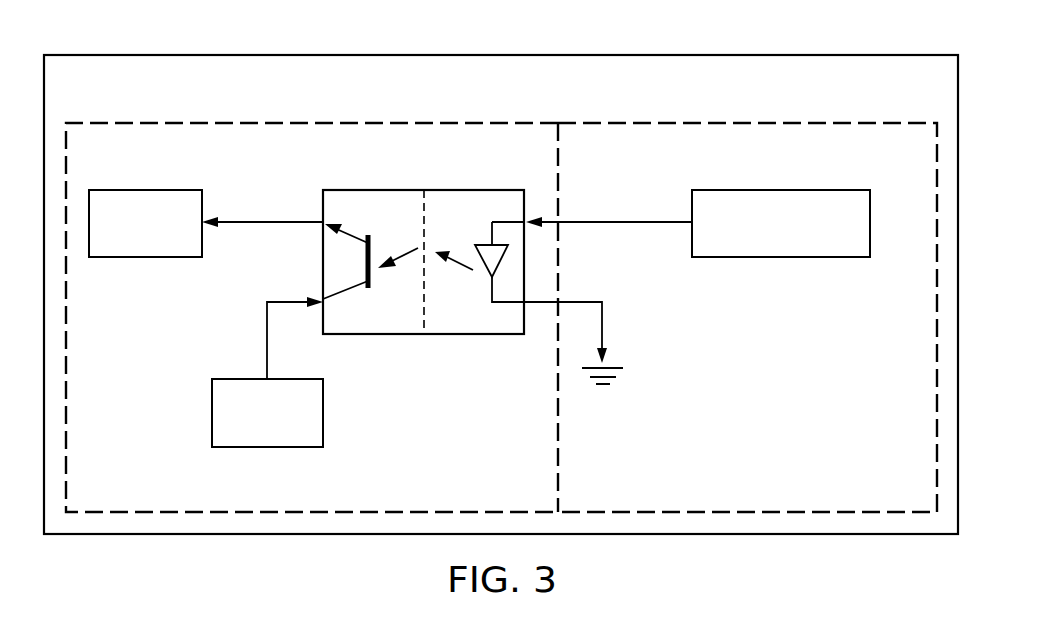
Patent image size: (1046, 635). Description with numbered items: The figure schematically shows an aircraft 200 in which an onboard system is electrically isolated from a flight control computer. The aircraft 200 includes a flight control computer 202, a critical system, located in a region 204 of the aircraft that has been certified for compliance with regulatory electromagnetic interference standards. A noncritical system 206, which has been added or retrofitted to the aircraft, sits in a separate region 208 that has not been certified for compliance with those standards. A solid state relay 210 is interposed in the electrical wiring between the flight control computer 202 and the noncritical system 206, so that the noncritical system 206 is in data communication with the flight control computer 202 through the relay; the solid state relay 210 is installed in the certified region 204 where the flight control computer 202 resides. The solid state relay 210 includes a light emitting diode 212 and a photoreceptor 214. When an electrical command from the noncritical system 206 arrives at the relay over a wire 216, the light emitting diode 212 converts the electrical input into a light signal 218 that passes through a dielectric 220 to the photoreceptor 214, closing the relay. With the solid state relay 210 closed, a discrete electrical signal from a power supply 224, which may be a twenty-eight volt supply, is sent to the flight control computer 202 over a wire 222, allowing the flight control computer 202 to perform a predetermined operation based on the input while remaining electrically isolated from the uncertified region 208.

The aircraft 200 is at (500, 55).
The flight control computer 202 is at (144, 190).
The region 204 is at (316, 123).
The noncritical system 206 is at (760, 236).
The region 208 is at (797, 123).
The solid state relay 210 is at (402, 190).
The light emitting diode 212 is at (484, 276).
The photoreceptor 214 is at (374, 290).
The wire 216 is at (624, 222).
The light signal 218 is at (463, 260).
The dielectric 220 is at (426, 314).
The wire 222 is at (260, 222).
The power supply 224 is at (212, 412).